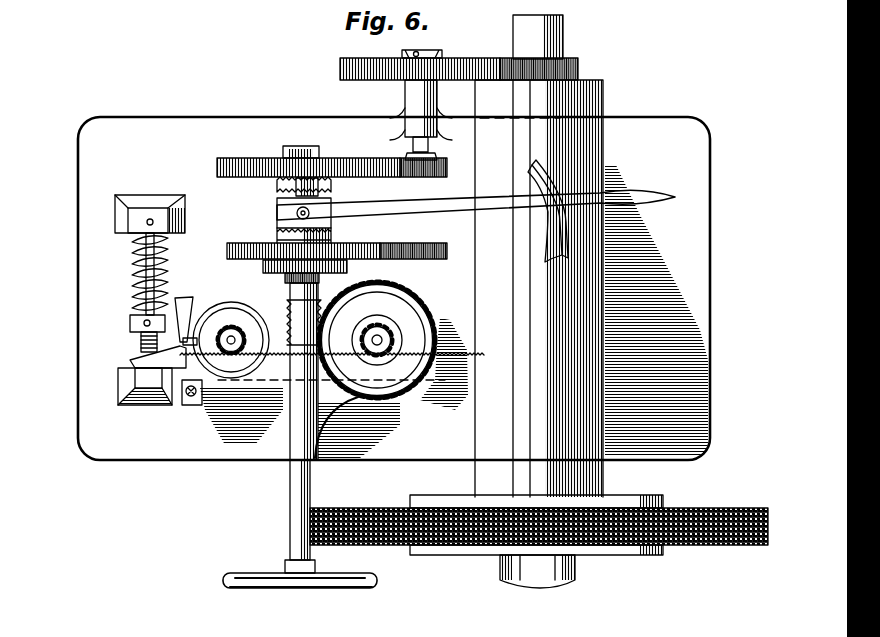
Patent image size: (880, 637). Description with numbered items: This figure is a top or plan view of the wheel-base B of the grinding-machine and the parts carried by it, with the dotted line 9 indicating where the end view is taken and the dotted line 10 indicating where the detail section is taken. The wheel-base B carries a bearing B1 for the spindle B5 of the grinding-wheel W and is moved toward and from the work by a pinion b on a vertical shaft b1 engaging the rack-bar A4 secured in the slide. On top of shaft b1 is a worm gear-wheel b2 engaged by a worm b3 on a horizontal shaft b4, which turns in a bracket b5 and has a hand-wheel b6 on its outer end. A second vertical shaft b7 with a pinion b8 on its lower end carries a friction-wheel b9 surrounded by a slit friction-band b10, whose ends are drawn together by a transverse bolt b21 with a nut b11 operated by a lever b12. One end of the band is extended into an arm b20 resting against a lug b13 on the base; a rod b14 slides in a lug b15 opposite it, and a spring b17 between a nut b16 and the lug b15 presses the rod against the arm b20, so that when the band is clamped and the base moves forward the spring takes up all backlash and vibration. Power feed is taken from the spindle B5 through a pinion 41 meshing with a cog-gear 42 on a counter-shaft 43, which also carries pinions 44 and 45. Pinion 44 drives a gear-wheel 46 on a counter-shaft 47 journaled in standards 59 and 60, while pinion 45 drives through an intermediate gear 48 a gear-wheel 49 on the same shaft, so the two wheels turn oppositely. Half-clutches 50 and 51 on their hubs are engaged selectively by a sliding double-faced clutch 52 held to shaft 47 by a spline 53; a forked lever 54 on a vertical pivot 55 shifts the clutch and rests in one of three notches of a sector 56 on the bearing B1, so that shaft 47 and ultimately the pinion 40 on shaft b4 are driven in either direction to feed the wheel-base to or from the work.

The dotted line 9 9 is at (725, 48).
The dotted line 10 10 is at (232, 515).
The wheel-base B is at (394, 288).
The bearing B1 is at (539, 288).
The spindle B5 is at (560, 40).
The pinion 41 is at (580, 66).
The cog-gear 42 is at (370, 80).
The counter-shaft 43 is at (412, 145).
The pinion 44 is at (448, 170).
The pinion 45 is at (448, 253).
The gear-wheel 46 is at (245, 158).
The counter-shaft 47 is at (285, 188).
The intermediate gear 48 is at (392, 243).
The gear-wheel 49 is at (229, 244).
The half-clutch 50 is at (322, 158).
The half-clutch 51 is at (280, 236).
The sliding double-faced clutch 52 is at (280, 212).
The spline 53 is at (320, 190).
The forked lever 54 is at (476, 205).
The vertical pivot 55 is at (312, 213).
The sector 56 is at (534, 178).
The standard 59 is at (262, 268).
The standard 60 is at (298, 146).
The pinion 40 is at (263, 270).
The pinion b is at (374, 320).
The vertical shaft b1 is at (381, 336).
The worm gear-wheel b2 is at (415, 396).
The worm b3 is at (292, 302).
The horizontal shaft b4 is at (310, 480).
The bracket b5 is at (336, 425).
The hand-wheel b6 is at (322, 573).
The second vertical shaft b7 is at (236, 335).
The pinion b8 is at (225, 332).
The friction-wheel b9 is at (185, 302).
The friction-band b10 is at (248, 392).
The nut b11 is at (183, 402).
The handle or lever b12 is at (193, 405).
The lug b13 is at (130, 385).
The rod b14 is at (137, 272).
The lug b15 is at (163, 200).
The nut b16 is at (130, 325).
The spring b17 is at (137, 256).
The arm b20 is at (135, 358).
The transverse bolt b21 is at (165, 400).
The rack-bar A4 is at (414, 339).
The grinding-wheel W is at (690, 510).